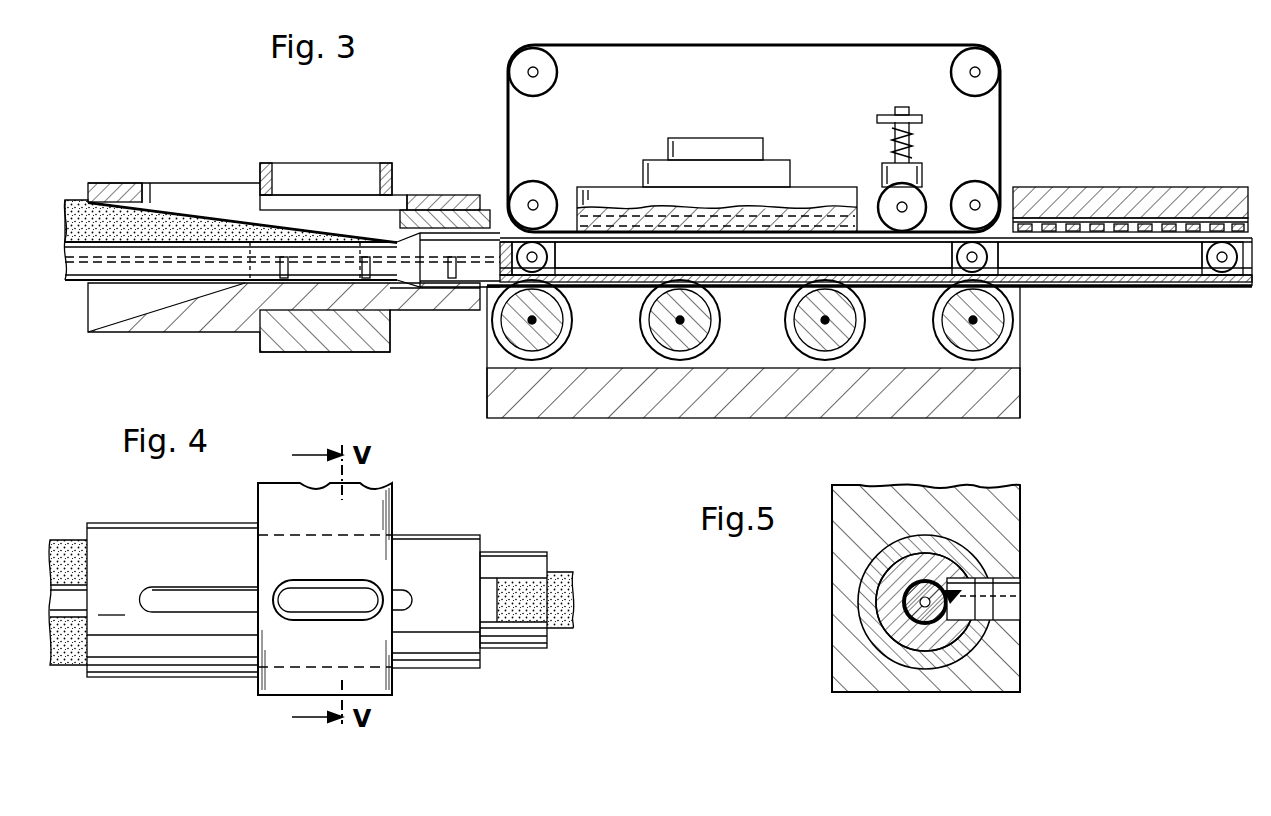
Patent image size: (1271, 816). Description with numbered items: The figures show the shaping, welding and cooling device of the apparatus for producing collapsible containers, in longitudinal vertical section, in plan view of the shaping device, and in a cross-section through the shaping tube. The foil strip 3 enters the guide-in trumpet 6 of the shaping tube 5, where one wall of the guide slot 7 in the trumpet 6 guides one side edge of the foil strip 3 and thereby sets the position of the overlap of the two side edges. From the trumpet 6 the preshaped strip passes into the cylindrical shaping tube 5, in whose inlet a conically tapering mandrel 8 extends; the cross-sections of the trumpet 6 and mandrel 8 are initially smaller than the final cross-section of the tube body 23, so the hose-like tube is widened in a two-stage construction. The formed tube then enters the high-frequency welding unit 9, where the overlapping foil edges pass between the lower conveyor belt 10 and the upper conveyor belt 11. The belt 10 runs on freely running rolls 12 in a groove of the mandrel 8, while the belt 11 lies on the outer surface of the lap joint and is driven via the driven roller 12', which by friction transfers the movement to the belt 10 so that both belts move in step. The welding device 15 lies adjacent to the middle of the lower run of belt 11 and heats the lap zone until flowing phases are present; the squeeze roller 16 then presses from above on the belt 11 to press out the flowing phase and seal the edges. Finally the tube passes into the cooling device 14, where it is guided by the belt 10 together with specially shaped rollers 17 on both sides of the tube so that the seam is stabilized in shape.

In FIG. 3, the foil strip 3 is at (76, 205).
In FIG. 4, the foil strip 3 is at (63, 545).
In FIG. 5, the foil strip 3 is at (902, 598).
In FIG. 3, the shaping tube 5 is at (433, 205).
In FIG. 4, the shaping tube 5 is at (511, 637).
In FIG. 5, the shaping tube 5 is at (882, 578).
In FIG. 3, the guide-in trumpet 6 is at (160, 325).
In FIG. 4, the guide-in trumpet 6 is at (153, 535).
In FIG. 3, the guide slot 7 is at (232, 192).
In FIG. 4, the guide slot 7 is at (199, 600).
In FIG. 3, the mandrel 8 is at (176, 245).
In FIG. 4, the mandrel 8 is at (77, 595).
In FIG. 5, the mandrel 8 is at (925, 636).
In FIG. 3, the high-frequency welding unit 9 is at (673, 82).
In FIG. 3, the lower conveyor belt 10 is at (641, 266).
In FIG. 3, the upper conveyor belt 11 is at (765, 45).
In FIG. 3, the roll 12 is at (878, 291).
In FIG. 3, the driven roller 12' is at (754, 184).
In FIG. 3, the cooling device 14 is at (1186, 191).
In FIG. 3, the welding device 15 is at (640, 206).
In FIG. 3, the squeeze roller 16 is at (890, 205).
In FIG. 3, the specially shaped rollers 17 is at (522, 322).
In FIG. 3, the tube body 23 is at (1056, 240).